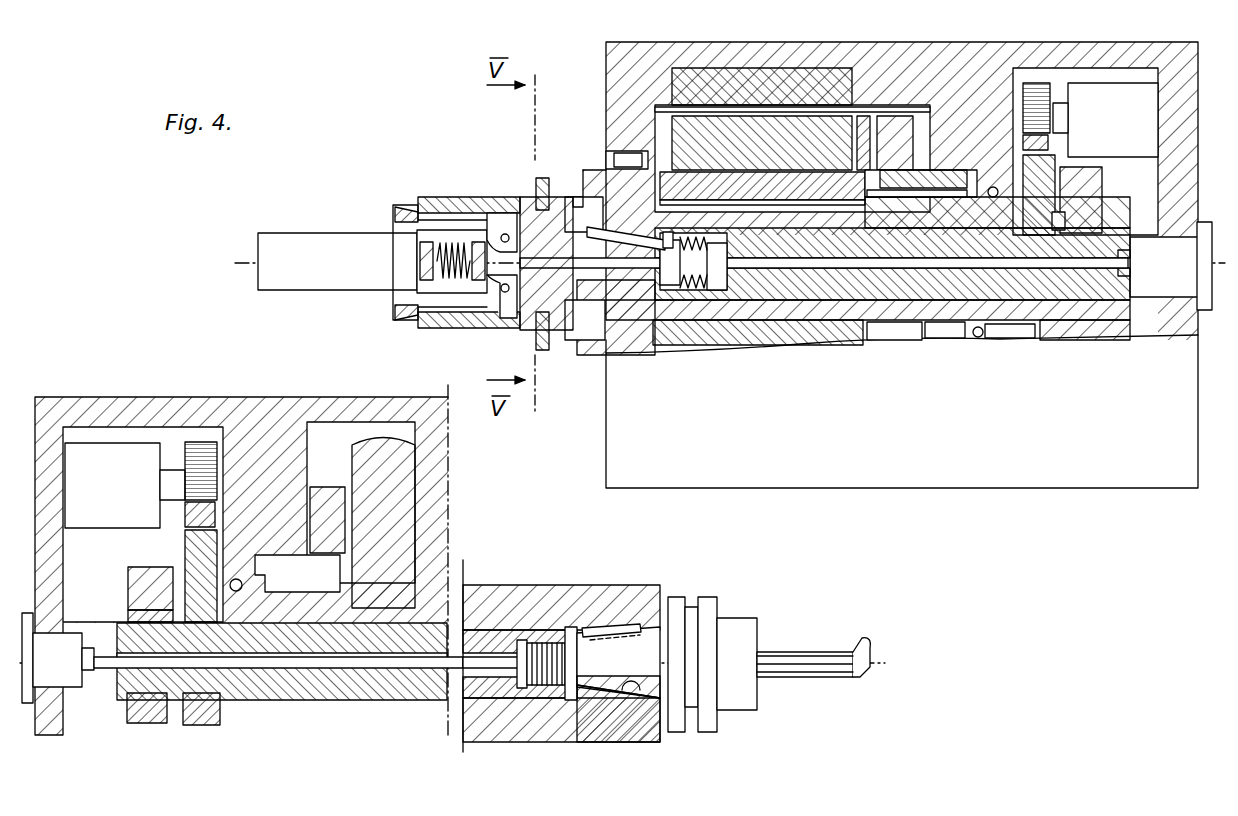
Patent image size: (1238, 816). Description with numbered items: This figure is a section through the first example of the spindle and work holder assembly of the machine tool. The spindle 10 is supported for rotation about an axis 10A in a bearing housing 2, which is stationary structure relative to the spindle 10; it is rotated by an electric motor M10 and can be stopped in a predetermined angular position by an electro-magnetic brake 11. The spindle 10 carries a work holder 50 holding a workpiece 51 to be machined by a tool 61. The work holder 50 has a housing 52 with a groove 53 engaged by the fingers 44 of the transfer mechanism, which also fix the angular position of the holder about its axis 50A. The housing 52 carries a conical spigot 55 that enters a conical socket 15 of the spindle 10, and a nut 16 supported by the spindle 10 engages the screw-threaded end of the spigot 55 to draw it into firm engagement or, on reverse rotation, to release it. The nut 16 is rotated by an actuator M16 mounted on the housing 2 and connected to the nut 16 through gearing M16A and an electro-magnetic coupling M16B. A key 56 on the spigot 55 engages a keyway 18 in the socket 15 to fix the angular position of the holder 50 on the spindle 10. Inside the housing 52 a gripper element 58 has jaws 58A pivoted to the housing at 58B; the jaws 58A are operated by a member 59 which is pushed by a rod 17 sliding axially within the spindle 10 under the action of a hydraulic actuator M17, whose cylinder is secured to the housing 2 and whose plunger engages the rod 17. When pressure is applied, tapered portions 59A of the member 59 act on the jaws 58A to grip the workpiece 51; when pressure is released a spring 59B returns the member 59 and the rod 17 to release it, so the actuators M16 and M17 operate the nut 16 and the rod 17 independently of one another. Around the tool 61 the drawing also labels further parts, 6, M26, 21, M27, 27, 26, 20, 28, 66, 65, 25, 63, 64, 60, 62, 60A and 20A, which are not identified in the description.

The bearing housing 2 is at (636, 42).
The electric motor M10 is at (748, 128).
The electro-magnetic brake 11 is at (898, 128).
The actuator M16 is at (1110, 100).
The gearing M16A is at (1020, 190).
The electro-magnetic coupling M16B is at (1092, 198).
The hydraulic actuator M17 is at (1143, 283).
The spindle 10 is at (905, 300).
The axis 10A is at (975, 280).
The rod 17 is at (806, 270).
The nut 16 is at (763, 290).
The conical socket 15 is at (637, 290).
The conical spigot 55 is at (597, 320).
The keyway 18 is at (585, 200).
The key 56 is at (597, 160).
The fingers 44 is at (533, 182).
The groove 53 is at (545, 185).
The workpiece 51 is at (291, 246).
The axis 50A is at (328, 260).
The work holder 50 is at (428, 192).
The housing 52 is at (447, 197).
The gripper jaws 58A is at (392, 208).
The gripper element 58 is at (390, 316).
The member 59 is at (442, 320).
The tapered portions 59A is at (400, 320).
The spring 59B is at (455, 252).
The pivot 58B is at (505, 290).
The tool head housing 6 is at (275, 398).
The tool head motor M26 is at (132, 498).
The bracket 21 is at (320, 488).
The motor shaft end M27 is at (70, 643).
The tool holder body 27 is at (482, 630).
The holder lower wall 26 is at (497, 688).
The tool holder sleeve 20 is at (568, 590).
The collet 28 is at (650, 628).
The locking pin 66 is at (610, 630).
The collet ring 65 is at (603, 682).
The collet lower jaw 25 is at (636, 708).
The flange plate 63 is at (688, 600).
The rear plate 64 is at (692, 722).
The tool body 60 is at (740, 620).
The tool shank 62 is at (762, 636).
The tool 61 is at (856, 650).
The tool axis 60A is at (784, 672).
The holder axis 20A is at (816, 693).